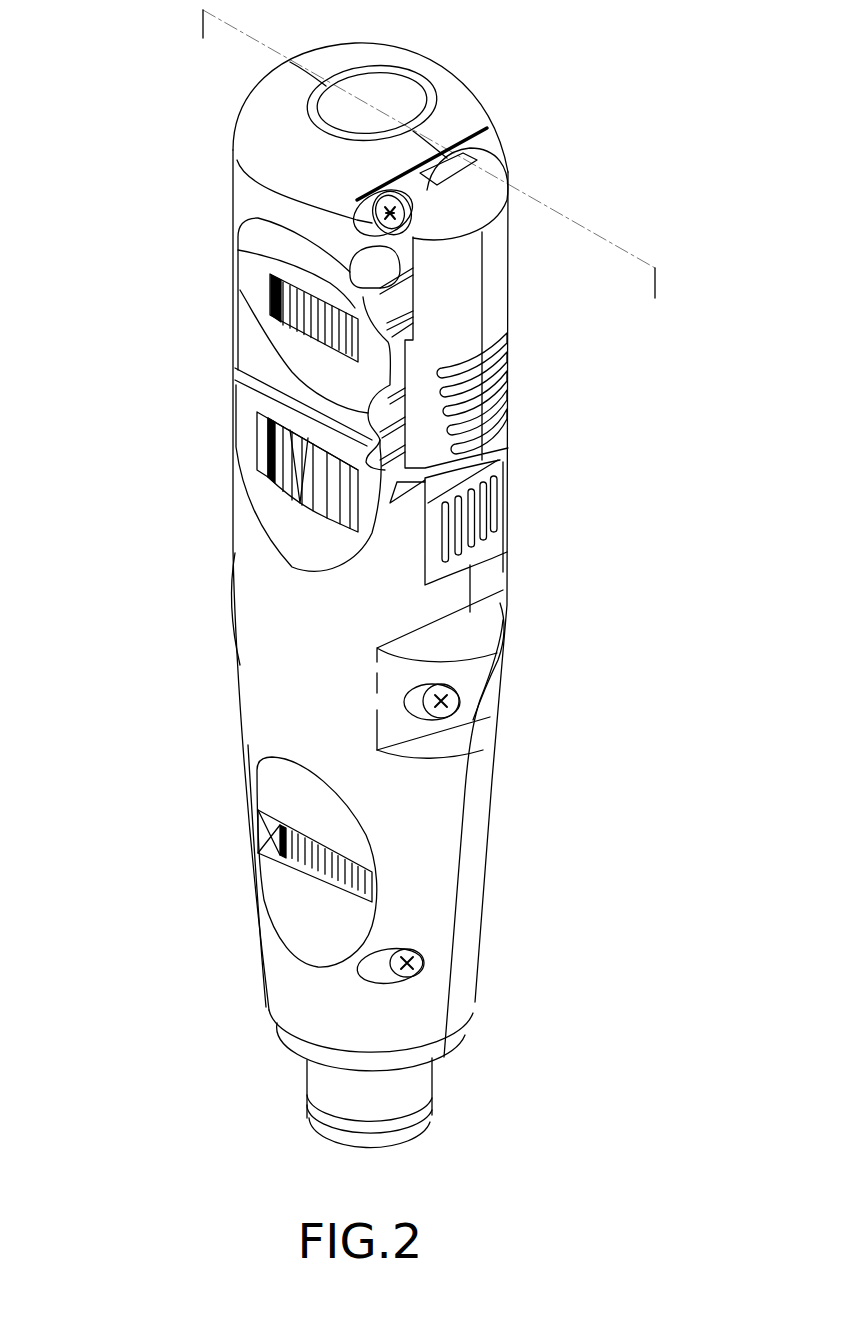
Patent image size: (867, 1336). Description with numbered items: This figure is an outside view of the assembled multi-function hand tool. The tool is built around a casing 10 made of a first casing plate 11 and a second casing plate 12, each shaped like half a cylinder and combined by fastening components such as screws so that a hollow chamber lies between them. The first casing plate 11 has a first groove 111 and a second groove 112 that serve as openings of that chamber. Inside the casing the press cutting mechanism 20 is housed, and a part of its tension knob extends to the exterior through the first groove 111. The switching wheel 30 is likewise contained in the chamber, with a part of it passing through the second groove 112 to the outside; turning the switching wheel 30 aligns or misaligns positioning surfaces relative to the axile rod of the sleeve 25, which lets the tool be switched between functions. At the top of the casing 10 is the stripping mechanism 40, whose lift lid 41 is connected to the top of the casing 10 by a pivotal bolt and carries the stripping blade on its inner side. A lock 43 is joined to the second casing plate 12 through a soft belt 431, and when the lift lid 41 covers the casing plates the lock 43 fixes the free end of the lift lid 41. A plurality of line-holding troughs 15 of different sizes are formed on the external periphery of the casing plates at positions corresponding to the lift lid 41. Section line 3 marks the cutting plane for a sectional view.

The section line 3- 3 is at (193, 43).
The casing 10 is at (234, 691).
The first casing plate 11 is at (245, 192).
The second casing plate 12 is at (462, 113).
The line-holding troughs 15 is at (360, 268).
The press cutting mechanism 20 is at (282, 509).
The sleeve 25 is at (298, 1109).
The switching wheel 30 is at (288, 876).
The stripping mechanism 40 is at (522, 410).
The lift lid 41 is at (490, 263).
The lock 43 is at (482, 552).
The first groove 111 is at (263, 442).
The second groove 112 is at (268, 825).
The soft belt 431 is at (503, 492).